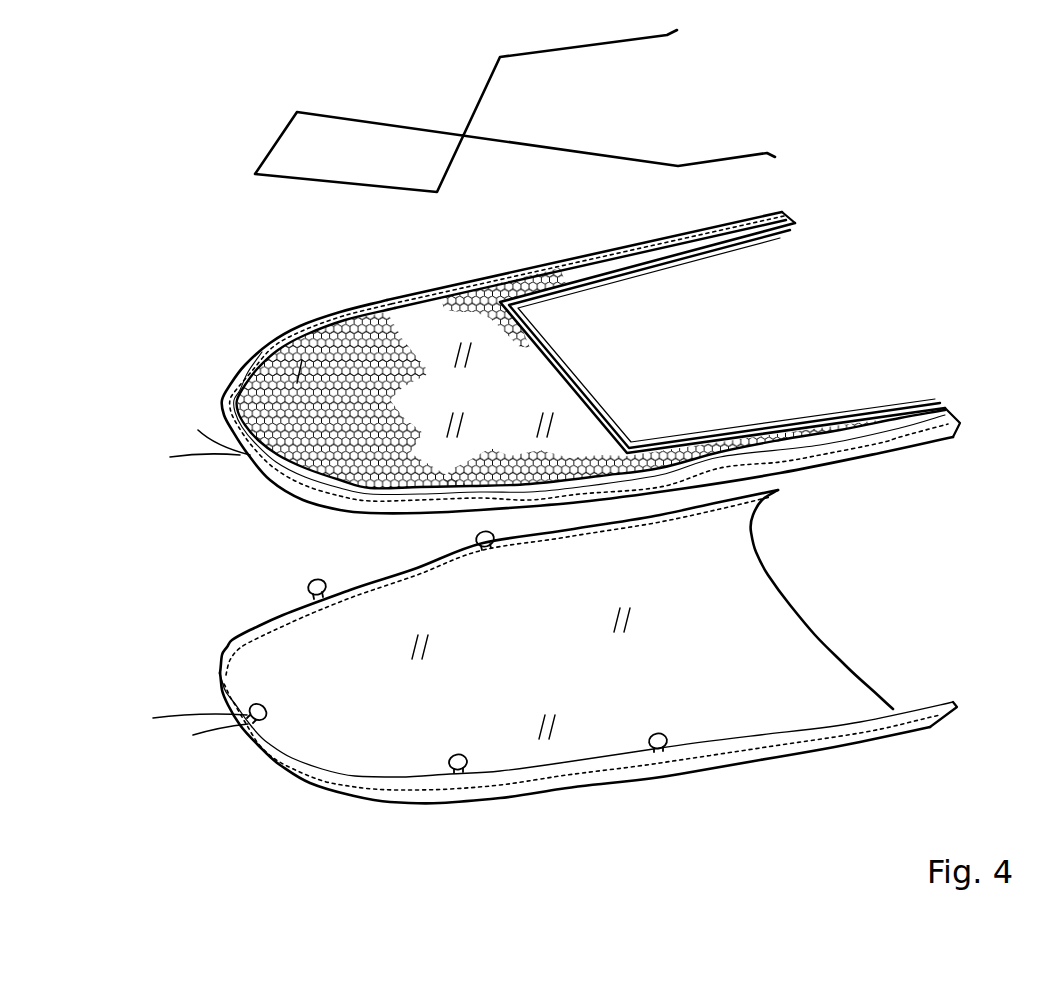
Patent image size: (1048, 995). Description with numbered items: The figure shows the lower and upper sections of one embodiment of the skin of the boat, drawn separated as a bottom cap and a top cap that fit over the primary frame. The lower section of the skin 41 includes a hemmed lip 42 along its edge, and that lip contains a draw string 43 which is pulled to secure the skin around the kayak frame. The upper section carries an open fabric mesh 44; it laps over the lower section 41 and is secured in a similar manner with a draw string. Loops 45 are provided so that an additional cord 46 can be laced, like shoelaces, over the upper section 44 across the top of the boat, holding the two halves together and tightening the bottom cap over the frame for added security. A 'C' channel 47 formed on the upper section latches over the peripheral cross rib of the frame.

The lower section of the skin 41 is at (323, 725).
The hemmed lip 42 is at (413, 778).
The draw string 43 is at (218, 728).
The open fabric mesh 44 is at (313, 445).
The loops 45 is at (648, 748).
The additional cord 46 is at (303, 182).
The 'C' channel 47 is at (613, 413).